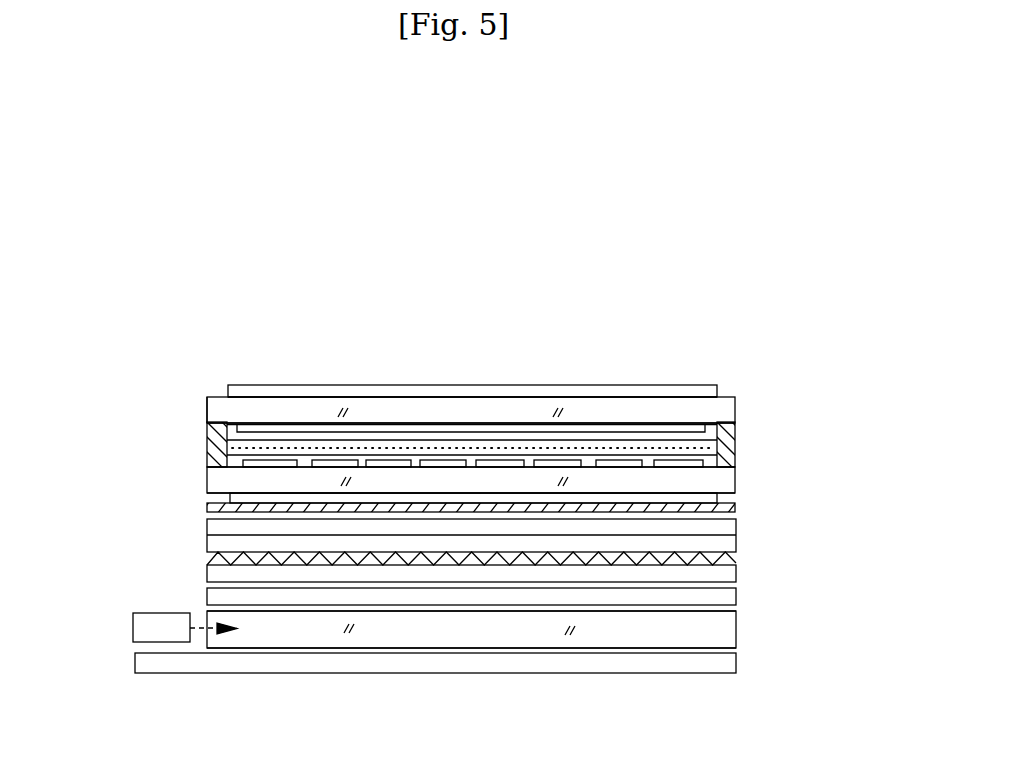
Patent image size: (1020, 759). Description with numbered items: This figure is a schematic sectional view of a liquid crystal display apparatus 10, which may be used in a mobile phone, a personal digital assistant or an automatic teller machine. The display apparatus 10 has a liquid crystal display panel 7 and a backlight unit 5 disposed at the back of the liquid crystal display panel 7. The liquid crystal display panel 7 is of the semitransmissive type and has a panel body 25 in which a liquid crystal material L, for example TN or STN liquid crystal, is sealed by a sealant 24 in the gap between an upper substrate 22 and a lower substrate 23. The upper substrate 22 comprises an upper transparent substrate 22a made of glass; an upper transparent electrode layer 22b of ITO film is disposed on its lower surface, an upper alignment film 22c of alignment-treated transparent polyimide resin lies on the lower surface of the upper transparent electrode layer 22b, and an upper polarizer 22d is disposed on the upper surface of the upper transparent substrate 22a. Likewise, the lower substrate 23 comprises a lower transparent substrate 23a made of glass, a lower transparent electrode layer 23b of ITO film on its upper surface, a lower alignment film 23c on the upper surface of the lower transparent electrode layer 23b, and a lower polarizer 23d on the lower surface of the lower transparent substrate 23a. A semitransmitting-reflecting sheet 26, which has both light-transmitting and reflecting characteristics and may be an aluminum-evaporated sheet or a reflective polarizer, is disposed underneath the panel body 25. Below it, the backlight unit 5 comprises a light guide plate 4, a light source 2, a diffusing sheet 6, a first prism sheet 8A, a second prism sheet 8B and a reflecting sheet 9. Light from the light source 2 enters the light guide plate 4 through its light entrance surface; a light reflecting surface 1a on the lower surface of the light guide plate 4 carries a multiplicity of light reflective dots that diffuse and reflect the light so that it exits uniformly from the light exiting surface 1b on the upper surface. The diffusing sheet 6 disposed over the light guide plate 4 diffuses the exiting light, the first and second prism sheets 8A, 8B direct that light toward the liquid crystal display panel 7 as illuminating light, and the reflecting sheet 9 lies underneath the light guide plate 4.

The liquid crystal display apparatus 10 is at (714, 335).
The liquid crystal display panel 7 is at (836, 342).
The backlight unit 5 is at (836, 520).
The upper substrate 22 is at (755, 393).
The upper transparent substrate 22a is at (288, 397).
The upper transparent electrode layer 22b is at (353, 423).
The upper alignment film 22c is at (392, 433).
The upper polarizer 22d is at (488, 387).
The panel body 25 is at (208, 382).
The liquid crystal material L is at (430, 447).
The lower substrate 23 is at (756, 484).
The lower transparent substrate 23a is at (617, 467).
The lower transparent electrode layer 23b is at (557, 460).
The lower alignment film 23c is at (512, 453).
The lower polarizer 23d is at (245, 492).
The sealant 24 is at (737, 438).
The semitransmitting-reflecting sheet 26 is at (737, 507).
The second prism sheet 8B is at (737, 523).
The first prism sheet 8A is at (737, 563).
The diffusing sheet 6 is at (737, 597).
The light guide plate 4 is at (737, 626).
The light reflecting surface 1a is at (250, 648).
The light exiting surface 1b is at (231, 610).
The reflecting sheet 9 is at (737, 662).
The light source 2 is at (133, 617).